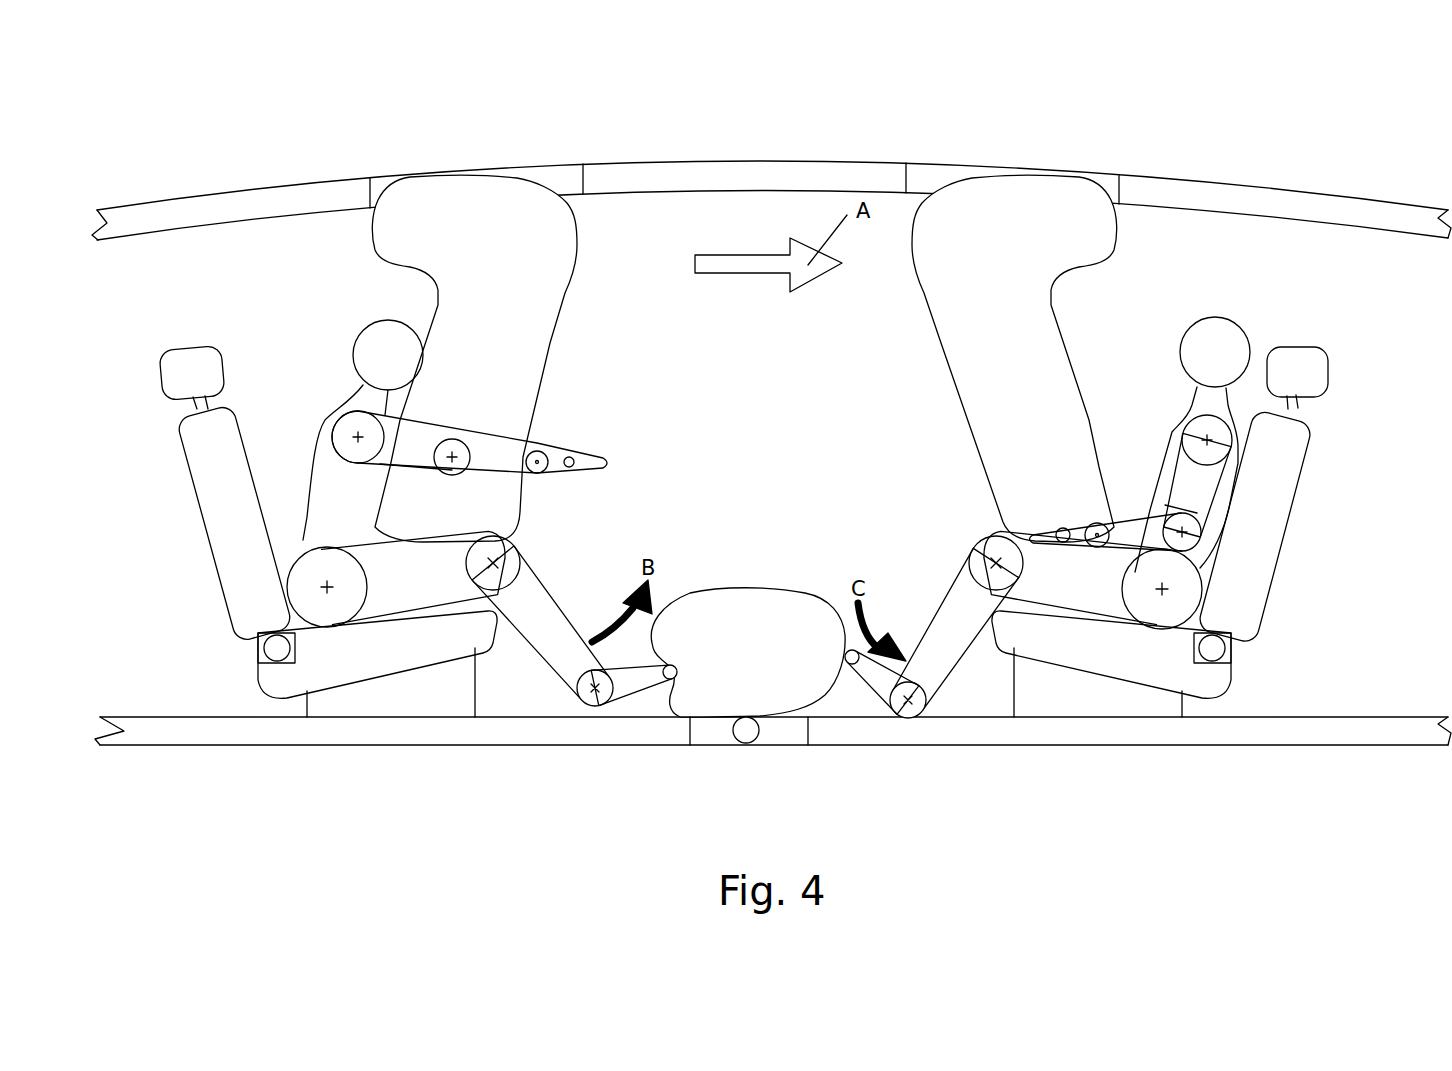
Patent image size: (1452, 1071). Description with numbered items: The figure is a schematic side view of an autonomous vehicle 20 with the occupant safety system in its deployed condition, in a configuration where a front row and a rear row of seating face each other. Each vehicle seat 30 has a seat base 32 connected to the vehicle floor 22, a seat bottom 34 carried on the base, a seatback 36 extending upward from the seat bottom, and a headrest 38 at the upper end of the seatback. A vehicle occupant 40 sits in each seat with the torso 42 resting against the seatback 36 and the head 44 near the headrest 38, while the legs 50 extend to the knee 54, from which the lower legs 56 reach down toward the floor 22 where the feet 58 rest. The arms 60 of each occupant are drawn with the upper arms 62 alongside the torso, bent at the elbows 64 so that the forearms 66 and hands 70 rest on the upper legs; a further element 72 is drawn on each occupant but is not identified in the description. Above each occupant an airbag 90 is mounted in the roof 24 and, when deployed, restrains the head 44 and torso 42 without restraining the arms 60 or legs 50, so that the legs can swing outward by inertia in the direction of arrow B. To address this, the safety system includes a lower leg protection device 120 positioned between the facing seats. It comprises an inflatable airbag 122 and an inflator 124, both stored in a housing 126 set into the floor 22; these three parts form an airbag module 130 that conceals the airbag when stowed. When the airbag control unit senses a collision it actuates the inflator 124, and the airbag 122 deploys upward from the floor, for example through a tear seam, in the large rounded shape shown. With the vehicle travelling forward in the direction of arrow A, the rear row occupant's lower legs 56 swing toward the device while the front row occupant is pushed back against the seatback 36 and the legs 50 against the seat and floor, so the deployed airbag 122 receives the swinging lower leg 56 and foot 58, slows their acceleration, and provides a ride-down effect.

The autonomous vehicle 20 is at (201, 148).
The vehicle floor 22 is at (496, 724).
The roof 24 is at (632, 180).
The vehicle seat 30 is at (208, 682).
The seat base 32 is at (432, 697).
The seat bottom 34 is at (390, 658).
The seatback 36 is at (233, 516).
The headrest 38 is at (178, 373).
The vehicle occupant 40 is at (288, 382).
The torso 42 is at (330, 473).
The head 44 is at (372, 340).
The legs 50 is at (405, 590).
The knee 54 is at (492, 555).
The lower legs 56 is at (538, 615).
The feet 58 is at (648, 680).
The arms 60 is at (406, 434).
The upper arms 62 is at (415, 455).
The elbows 64 is at (452, 473).
The forearms 66 is at (502, 460).
The hands 70 is at (608, 452).
The shoulder joint 72 is at (360, 430).
The airbag 90 is at (503, 282).
The lower leg protection device 120 is at (745, 562).
The inflatable airbag 122 is at (762, 607).
The inflator 124 is at (744, 738).
The housing 126 is at (787, 733).
The airbag module 130 is at (715, 768).